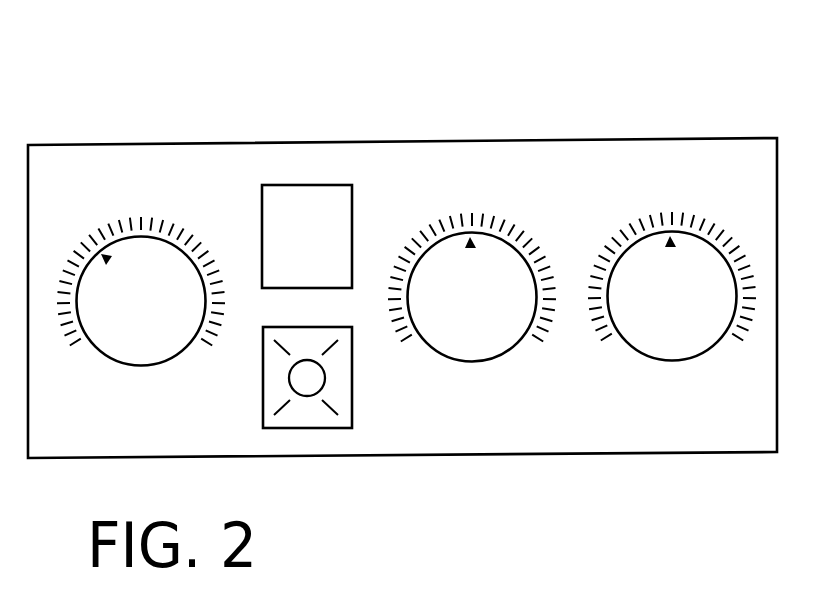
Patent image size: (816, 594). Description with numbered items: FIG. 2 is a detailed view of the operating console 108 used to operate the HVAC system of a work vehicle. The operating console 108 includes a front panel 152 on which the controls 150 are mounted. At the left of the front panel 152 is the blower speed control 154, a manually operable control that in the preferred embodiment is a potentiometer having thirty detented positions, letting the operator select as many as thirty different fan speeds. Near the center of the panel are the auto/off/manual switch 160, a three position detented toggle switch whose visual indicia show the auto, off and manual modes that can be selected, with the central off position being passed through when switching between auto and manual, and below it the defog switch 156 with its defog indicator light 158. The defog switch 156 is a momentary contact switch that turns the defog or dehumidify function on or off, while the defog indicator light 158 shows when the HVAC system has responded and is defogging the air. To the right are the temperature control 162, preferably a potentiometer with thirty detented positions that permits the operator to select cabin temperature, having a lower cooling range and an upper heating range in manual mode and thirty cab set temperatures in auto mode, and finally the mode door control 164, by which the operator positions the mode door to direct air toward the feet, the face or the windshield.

The operating console 108 is at (570, 100).
The controls 150 is at (444, 474).
The front panel 152 is at (677, 138).
The blower speed control 154 is at (134, 365).
The defog switch 156 is at (352, 393).
The defog indicator light 158 is at (289, 378).
The auto/off/manual switch 160 is at (302, 185).
The temperature control 162 is at (472, 362).
The mode door control 164 is at (670, 360).